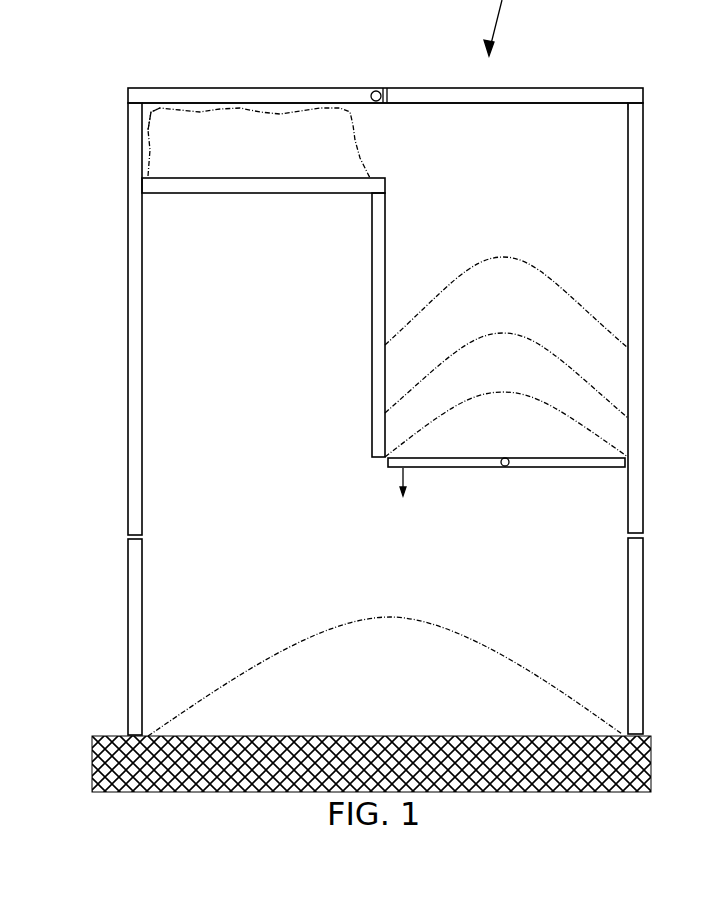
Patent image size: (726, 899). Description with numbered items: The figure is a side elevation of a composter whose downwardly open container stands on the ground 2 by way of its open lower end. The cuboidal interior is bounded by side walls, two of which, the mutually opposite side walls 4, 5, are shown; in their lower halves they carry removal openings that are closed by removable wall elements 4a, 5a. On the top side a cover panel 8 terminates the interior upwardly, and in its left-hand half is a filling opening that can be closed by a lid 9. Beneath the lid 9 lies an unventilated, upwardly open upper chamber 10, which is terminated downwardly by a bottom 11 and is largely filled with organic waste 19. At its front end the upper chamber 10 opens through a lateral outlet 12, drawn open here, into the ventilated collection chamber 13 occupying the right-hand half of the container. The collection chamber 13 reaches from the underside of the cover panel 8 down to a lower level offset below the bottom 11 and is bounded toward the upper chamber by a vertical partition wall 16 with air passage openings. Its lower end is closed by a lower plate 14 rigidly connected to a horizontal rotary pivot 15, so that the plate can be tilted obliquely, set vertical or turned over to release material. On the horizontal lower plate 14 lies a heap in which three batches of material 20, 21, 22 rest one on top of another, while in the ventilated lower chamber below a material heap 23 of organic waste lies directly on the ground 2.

The ground 2 is at (600, 773).
The side wall 4 is at (635, 283).
The removable wall element 4a is at (636, 625).
The side wall 5 is at (133, 245).
The removable wall element 5a is at (137, 600).
The cover panel 8 is at (543, 97).
The lid 9 is at (223, 95).
The upper chamber 10 is at (150, 110).
The bottom 11 is at (265, 185).
The lateral outlet 12 is at (377, 123).
The collection chamber 13 is at (605, 148).
The lower plate 14 is at (595, 467).
The rotary pivot 15 is at (503, 468).
The partition wall 16 is at (378, 265).
The organic waste 19 is at (275, 150).
The batch of material 20 is at (500, 439).
The batch of material 21 is at (516, 376).
The batch of material 22 is at (492, 272).
The material heap 23 is at (477, 667).